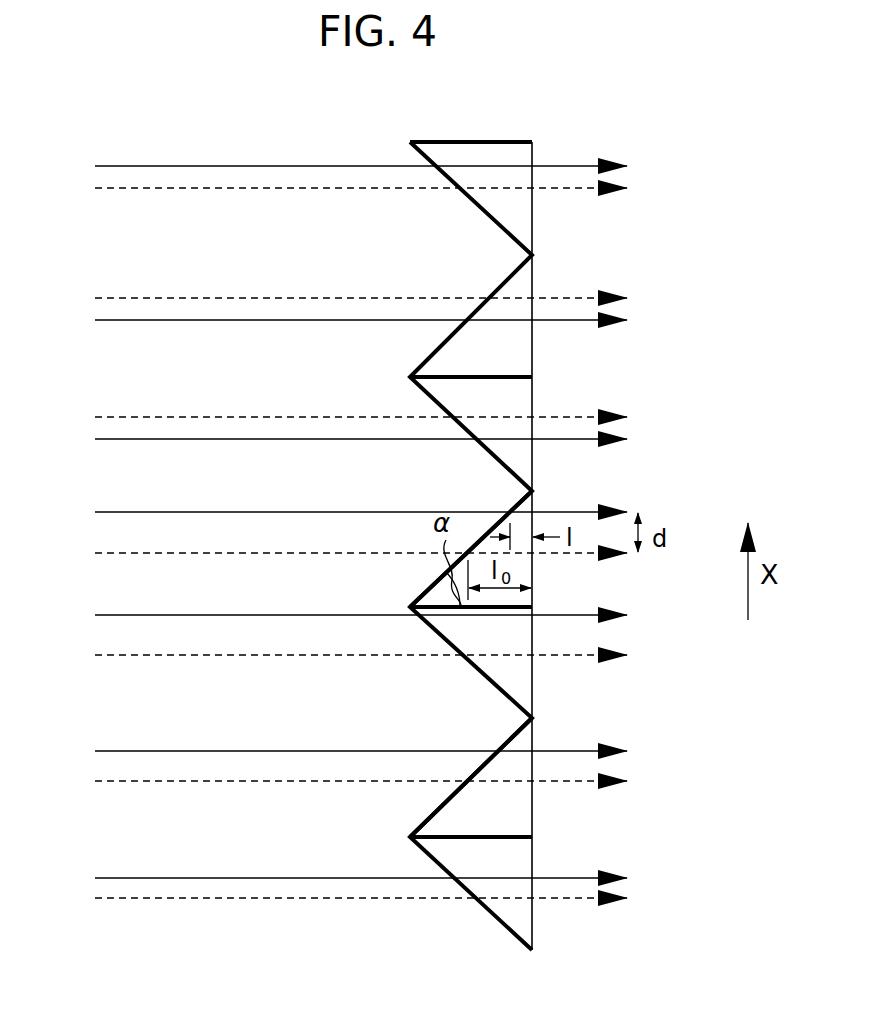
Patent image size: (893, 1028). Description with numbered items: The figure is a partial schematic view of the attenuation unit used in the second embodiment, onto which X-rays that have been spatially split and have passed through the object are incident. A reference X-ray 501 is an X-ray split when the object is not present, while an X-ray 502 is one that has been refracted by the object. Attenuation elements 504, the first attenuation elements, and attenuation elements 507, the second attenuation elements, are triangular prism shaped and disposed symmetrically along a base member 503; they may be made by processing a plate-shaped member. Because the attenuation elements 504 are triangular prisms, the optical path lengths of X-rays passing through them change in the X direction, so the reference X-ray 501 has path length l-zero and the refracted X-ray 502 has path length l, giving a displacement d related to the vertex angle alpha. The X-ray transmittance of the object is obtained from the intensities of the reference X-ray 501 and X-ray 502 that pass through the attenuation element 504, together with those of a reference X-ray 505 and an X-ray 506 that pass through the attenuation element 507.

The reference X-ray 501 is at (118, 556).
The X-ray 502 is at (122, 511).
The prism sheet 503 is at (533, 142).
The attenuation element 504 is at (525, 568).
The reference X-ray 505 is at (140, 659).
The X-ray 506 is at (115, 618).
The attenuation element 507 is at (522, 692).